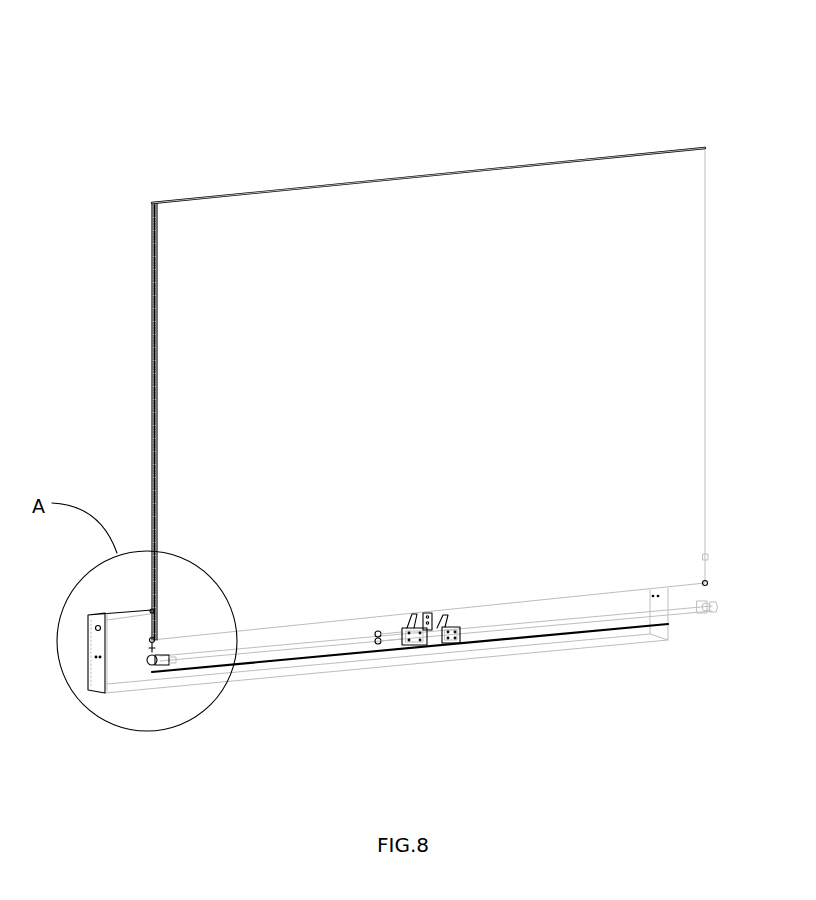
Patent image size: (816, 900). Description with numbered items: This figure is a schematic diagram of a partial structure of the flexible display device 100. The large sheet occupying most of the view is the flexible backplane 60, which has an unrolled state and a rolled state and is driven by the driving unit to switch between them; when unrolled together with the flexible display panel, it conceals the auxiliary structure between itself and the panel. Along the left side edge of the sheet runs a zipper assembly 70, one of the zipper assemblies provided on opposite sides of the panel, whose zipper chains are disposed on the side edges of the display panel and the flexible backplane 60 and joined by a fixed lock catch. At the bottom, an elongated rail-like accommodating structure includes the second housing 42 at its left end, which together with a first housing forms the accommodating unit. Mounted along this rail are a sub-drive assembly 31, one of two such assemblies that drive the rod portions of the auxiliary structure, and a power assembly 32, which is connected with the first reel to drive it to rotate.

The flexible display device 100 is at (363, 176).
The flexible backplane 60 is at (669, 400).
The zipper assembly 70 is at (157, 270).
The second housing 42 is at (128, 664).
The power assembly 32 is at (152, 641).
The sub-drive assembly 31 is at (403, 644).